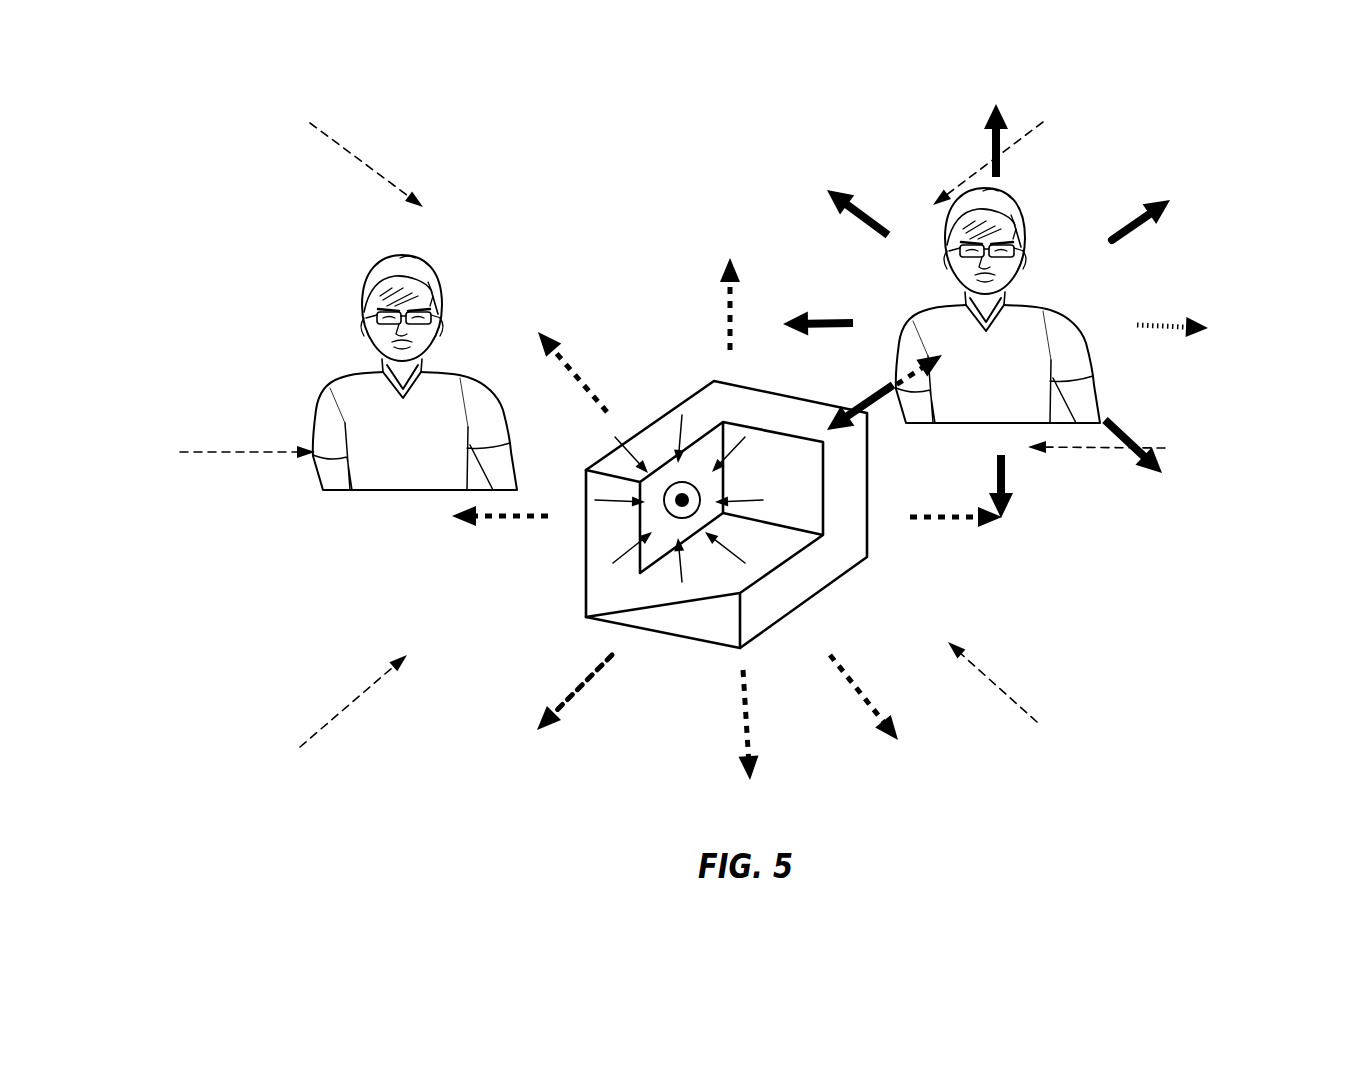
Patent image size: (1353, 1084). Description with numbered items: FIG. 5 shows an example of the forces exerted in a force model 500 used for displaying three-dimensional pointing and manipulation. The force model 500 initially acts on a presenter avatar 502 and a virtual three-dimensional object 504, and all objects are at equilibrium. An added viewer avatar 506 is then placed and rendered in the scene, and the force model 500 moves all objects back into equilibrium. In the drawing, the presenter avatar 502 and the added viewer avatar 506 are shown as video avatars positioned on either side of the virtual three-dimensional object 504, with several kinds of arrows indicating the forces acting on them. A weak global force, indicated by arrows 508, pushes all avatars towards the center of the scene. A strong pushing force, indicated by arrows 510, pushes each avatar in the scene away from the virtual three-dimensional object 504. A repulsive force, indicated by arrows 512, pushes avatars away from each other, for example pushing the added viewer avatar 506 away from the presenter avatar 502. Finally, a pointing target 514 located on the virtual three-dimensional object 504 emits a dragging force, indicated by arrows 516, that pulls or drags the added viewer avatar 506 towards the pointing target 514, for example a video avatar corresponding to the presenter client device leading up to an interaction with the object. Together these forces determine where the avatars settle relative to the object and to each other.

The force model 500 is at (258, 826).
The presenter avatar 502 is at (1022, 208).
The virtual 3D object 504 is at (593, 583).
The added viewer avatar 506 is at (383, 263).
The arrows indicating weak global force 508 is at (355, 157).
The arrows indicating strong pushing force 510 is at (578, 692).
The arrows indicating repulsive force 512 is at (1143, 220).
The pointing target 514 is at (700, 495).
The arrows indicating dragging force 516 is at (620, 445).